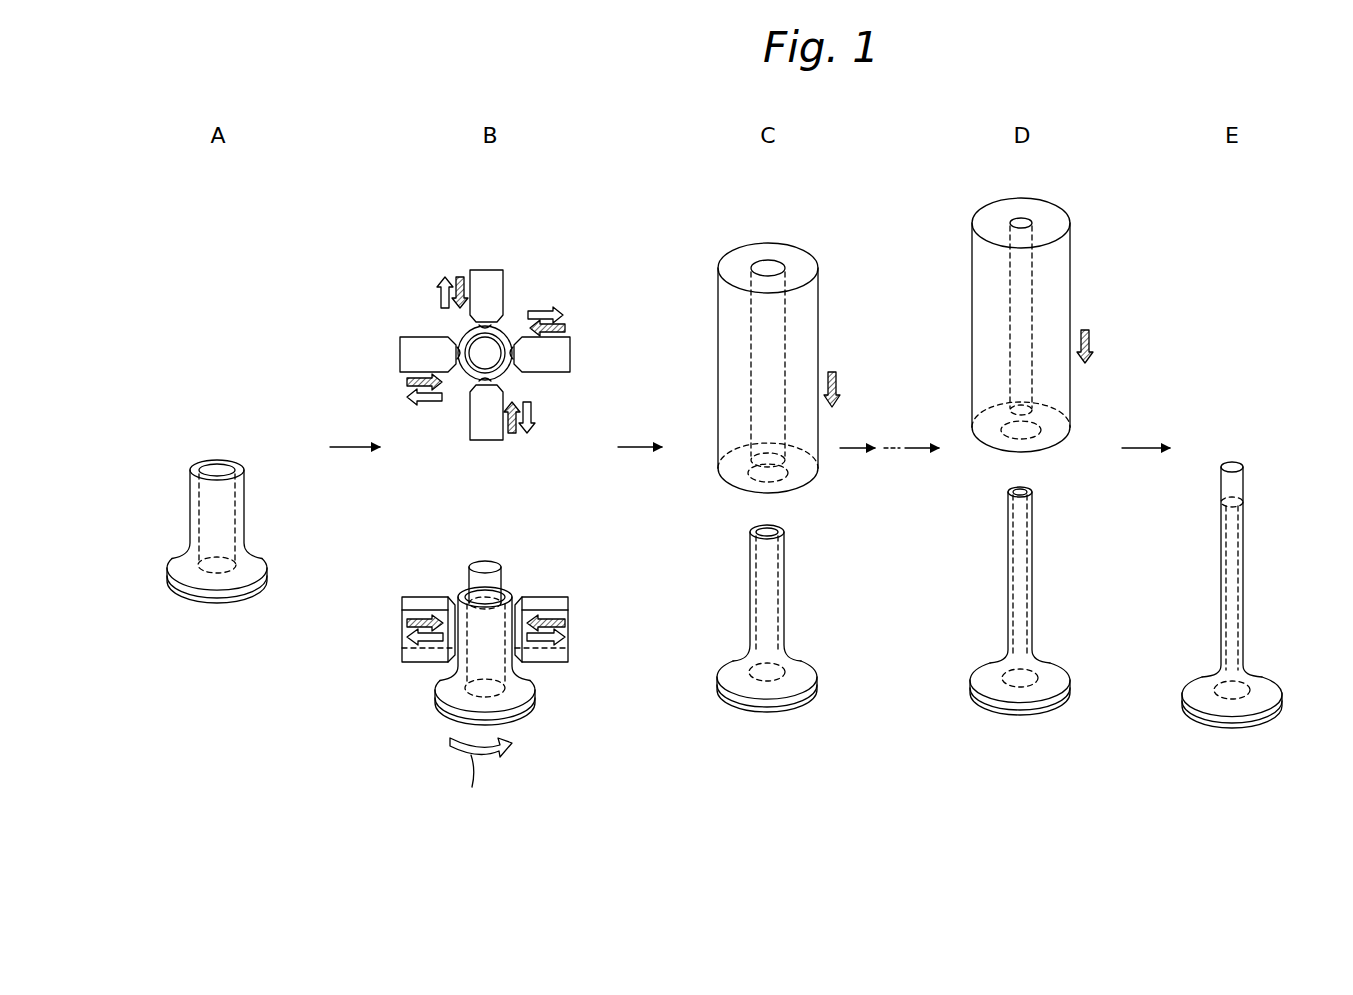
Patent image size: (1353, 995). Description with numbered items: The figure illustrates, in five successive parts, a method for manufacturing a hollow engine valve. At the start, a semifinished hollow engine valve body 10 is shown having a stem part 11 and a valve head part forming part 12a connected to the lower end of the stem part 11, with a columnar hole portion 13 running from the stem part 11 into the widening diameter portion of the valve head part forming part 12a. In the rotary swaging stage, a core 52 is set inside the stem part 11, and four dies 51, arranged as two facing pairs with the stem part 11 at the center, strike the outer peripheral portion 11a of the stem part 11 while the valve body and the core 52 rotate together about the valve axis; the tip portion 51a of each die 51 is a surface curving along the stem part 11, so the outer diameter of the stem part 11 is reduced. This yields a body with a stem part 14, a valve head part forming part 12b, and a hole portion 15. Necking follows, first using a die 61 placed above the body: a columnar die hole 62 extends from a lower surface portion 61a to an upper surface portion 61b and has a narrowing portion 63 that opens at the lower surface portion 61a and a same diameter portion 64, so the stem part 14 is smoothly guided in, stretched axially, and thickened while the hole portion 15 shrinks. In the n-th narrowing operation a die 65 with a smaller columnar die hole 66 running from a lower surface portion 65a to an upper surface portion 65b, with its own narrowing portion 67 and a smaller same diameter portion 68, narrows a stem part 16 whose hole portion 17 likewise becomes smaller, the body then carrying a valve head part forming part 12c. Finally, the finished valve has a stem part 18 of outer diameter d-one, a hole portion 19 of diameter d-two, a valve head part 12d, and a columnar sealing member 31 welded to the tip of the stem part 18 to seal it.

The semifinished hollow engine valve body 10 is at (364, 480).
The stem part 11 is at (226, 484).
The outer peripheral portion 11a is at (245, 522).
The valve head part forming part 12a is at (248, 580).
The valve head part forming part 12b is at (810, 678).
The head portion after second forming 12c is at (1060, 680).
The finished valve head portion 12d is at (1265, 690).
The columnar hole portion 13 is at (200, 522).
The stem part 14 is at (809, 618).
The hole portion 15 is at (778, 568).
The stem part 16 is at (1046, 601).
The hole portion 17 is at (1028, 528).
The stem part 18 is at (1254, 595).
The hole portion 19 is at (1240, 538).
The columnar sealing member 31 is at (1240, 482).
The swaging die 51 is at (482, 501).
The tip portion 51a is at (491, 320).
The core 52 is at (484, 358).
The die 61 is at (773, 345).
The lower surface portion 61a is at (815, 484).
The upper surface portion 61b is at (745, 258).
The columnar die hole 62 is at (716, 371).
The narrowing portion 63 is at (752, 455).
The same diameter portion 64 is at (752, 385).
The die 65 is at (1009, 305).
The lower surface portion 65a is at (1066, 404).
The upper surface portion 65b is at (990, 213).
The columnar die hole 66 is at (965, 328).
The narrowing portion 67 is at (1010, 408).
The same diameter portion 68 is at (1012, 338).